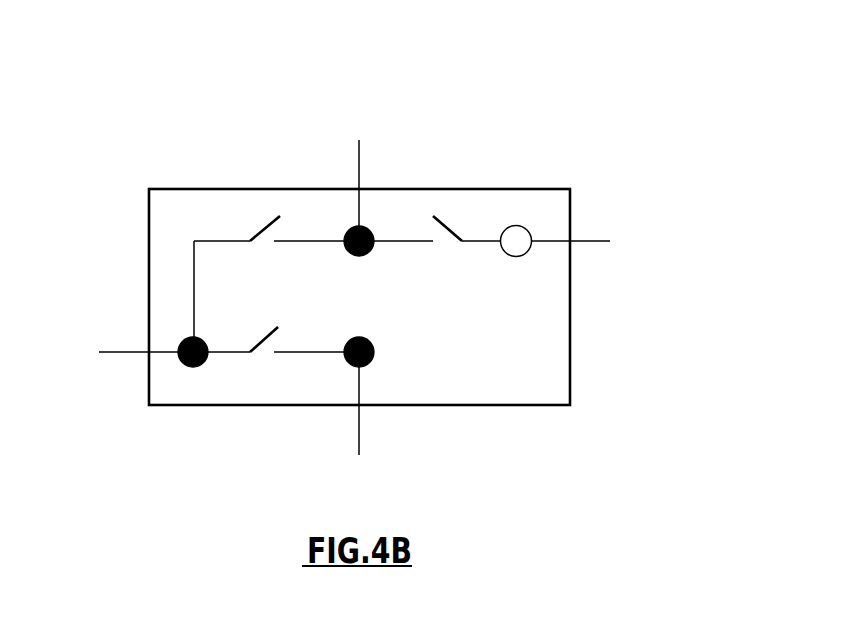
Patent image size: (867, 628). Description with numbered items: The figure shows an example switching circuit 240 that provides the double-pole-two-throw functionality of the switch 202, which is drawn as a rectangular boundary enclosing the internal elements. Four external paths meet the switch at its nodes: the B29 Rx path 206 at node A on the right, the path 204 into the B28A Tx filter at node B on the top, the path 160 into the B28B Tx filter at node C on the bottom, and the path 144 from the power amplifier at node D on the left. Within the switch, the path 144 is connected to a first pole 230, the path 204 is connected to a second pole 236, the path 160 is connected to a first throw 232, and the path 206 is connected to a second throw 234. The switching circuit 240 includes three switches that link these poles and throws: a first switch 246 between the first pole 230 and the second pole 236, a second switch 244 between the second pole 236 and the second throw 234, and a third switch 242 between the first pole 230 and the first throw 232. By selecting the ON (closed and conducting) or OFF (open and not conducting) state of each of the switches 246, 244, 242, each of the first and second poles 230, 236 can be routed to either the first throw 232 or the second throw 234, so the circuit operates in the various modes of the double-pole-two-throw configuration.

The switching circuit 240 is at (470, 87).
The switch 202 is at (570, 348).
The path into the B28A Tx filter 204 is at (358, 163).
The B29 Rx path 206 is at (593, 241).
The first switch 246 is at (247, 210).
The second switch 244 is at (448, 250).
The third switch 242 is at (293, 320).
The second pole 236 is at (372, 232).
The second throw 234 is at (525, 253).
The first throw 232 is at (375, 352).
The first pole 230 is at (193, 365).
The path into the B28B Tx filter 160 is at (358, 430).
The path from the PA 144 is at (125, 355).